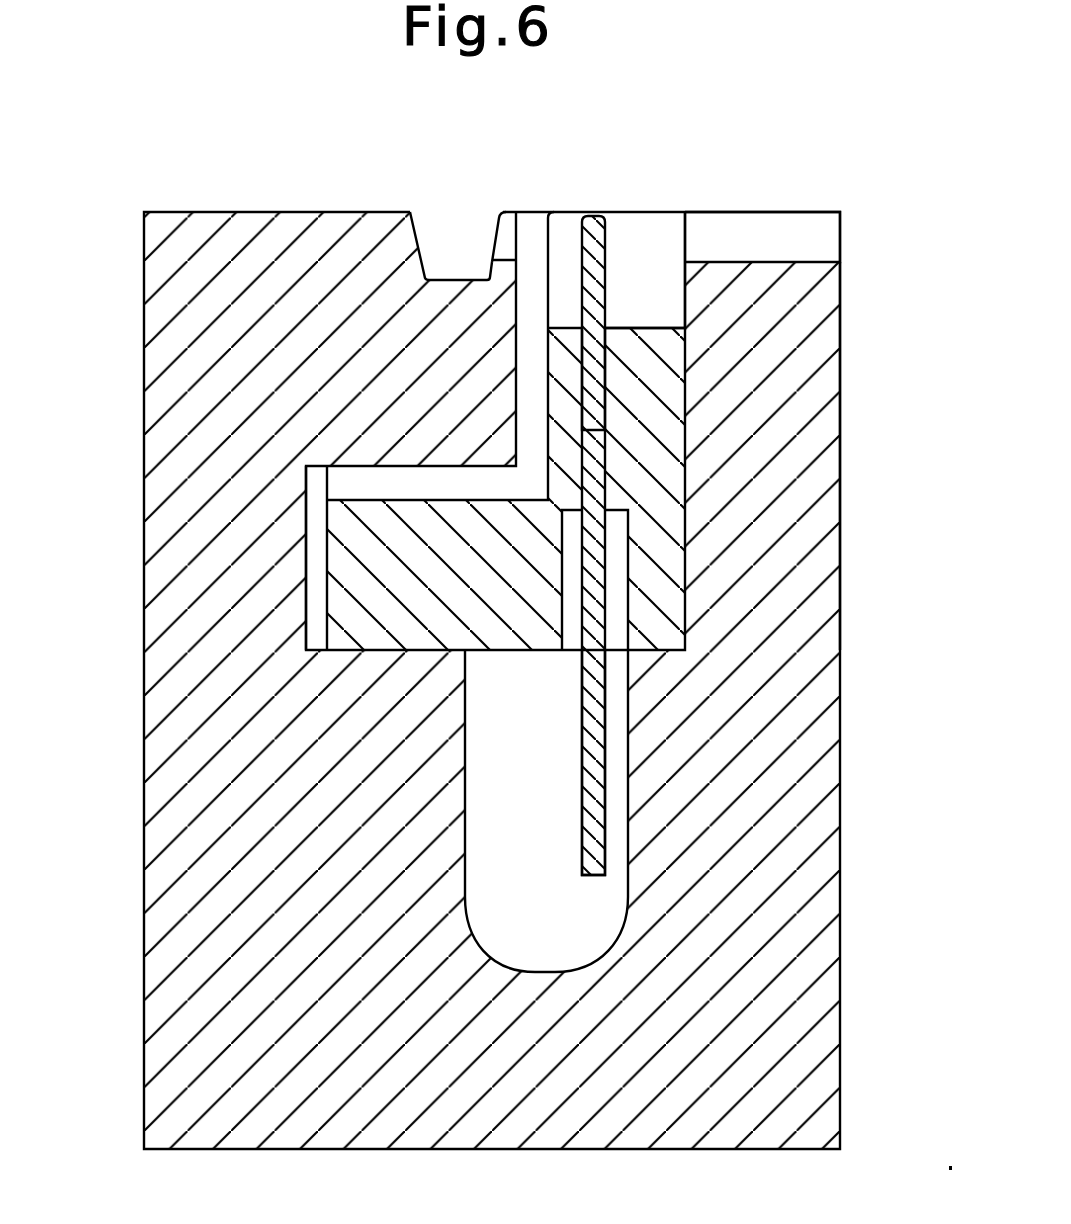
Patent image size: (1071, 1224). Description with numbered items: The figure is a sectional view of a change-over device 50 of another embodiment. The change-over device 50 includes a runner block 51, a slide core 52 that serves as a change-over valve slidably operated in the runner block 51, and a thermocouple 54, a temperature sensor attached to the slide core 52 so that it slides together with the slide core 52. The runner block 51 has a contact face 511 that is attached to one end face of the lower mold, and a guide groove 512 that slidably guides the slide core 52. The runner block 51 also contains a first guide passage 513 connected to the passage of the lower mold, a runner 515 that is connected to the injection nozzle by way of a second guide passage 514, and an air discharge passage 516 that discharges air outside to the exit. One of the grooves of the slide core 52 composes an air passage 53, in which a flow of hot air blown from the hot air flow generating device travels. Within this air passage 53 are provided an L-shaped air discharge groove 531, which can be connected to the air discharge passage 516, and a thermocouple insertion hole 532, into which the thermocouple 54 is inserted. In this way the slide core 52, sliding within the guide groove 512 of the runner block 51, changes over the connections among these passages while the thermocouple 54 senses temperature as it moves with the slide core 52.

The change-over device 50 is at (133, 199).
The runner block 51 is at (187, 719).
The contact face 511 is at (842, 321).
The guide groove 512 is at (308, 527).
The first guide passage 513 is at (763, 232).
The second guide passage 514 is at (500, 233).
The runner 515 is at (453, 262).
The air discharge passage 516 is at (582, 925).
The slide core 52 is at (645, 465).
The air passage 53 is at (542, 192).
The L-shaped air discharge groove 531 is at (642, 242).
The thermocouple insertion hole 532 is at (598, 380).
The thermocouple 54 is at (593, 683).